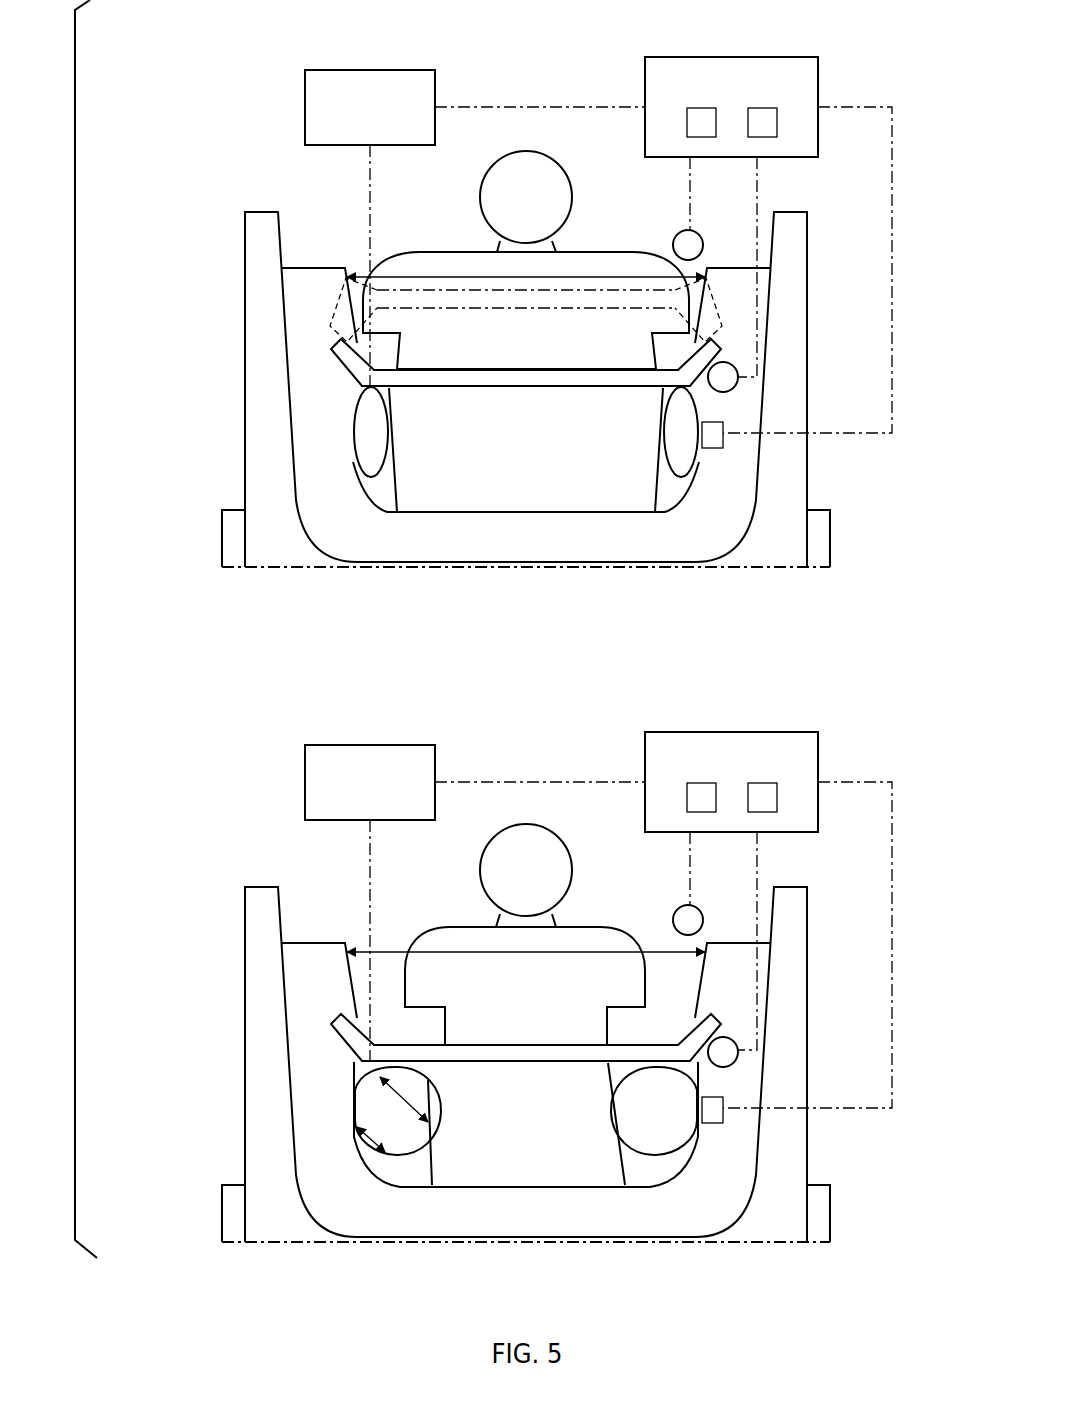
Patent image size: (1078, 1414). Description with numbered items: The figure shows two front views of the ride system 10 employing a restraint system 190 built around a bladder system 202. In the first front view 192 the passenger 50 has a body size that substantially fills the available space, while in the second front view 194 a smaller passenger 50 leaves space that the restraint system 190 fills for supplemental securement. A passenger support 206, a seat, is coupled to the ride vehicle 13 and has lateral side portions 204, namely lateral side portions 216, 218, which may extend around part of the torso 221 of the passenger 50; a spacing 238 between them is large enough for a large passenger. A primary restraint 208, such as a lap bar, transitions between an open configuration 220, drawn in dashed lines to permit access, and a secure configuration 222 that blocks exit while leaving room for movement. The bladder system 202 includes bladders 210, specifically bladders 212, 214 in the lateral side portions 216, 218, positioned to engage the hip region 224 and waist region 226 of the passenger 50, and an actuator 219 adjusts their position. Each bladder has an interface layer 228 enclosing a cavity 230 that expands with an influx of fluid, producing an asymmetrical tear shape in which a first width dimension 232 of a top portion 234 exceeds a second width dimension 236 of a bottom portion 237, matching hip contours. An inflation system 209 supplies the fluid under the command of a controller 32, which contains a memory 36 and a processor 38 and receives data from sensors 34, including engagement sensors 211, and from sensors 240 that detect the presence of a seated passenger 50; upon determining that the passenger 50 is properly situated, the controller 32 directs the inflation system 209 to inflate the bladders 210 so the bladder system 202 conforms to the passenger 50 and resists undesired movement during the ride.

The ride system 10 is at (232, 37).
The ride vehicle 13 is at (258, 232).
The controller 32 is at (735, 57).
The sensor 34 is at (700, 238).
The memory 36 is at (777, 121).
The processor 38 is at (687, 119).
The passenger 50 is at (485, 263).
The restraint system 190 is at (187, 63).
The first front view 192 is at (177, 163).
The second front view 194 is at (203, 258).
The bladder system 202 is at (397, 433).
The lateral side portion 204 is at (316, 278).
The passenger support 206 is at (505, 547).
The primary restraint 208 is at (478, 378).
The inflation system 209 is at (370, 70).
The bladder 210 is at (365, 452).
The engagement sensor 211 is at (738, 385).
The bladder 212 is at (365, 405).
The bladder 214 is at (687, 410).
The lateral side portion 216 is at (297, 298).
The lateral side portion 218 is at (742, 320).
The actuator 219 is at (725, 440).
The open configuration 220 is at (618, 288).
The torso 221 is at (427, 333).
The secure configuration 222 is at (527, 393).
The hip region 224 is at (650, 432).
The waist region 226 is at (403, 392).
The interface layer 228 is at (367, 1095).
The cavity 230 is at (383, 1115).
The first width dimension 232 is at (420, 1080).
The top portion 234 is at (428, 1082).
The second width dimension 236 is at (360, 1152).
The bottom portion 237 is at (367, 1153).
The spacing 238 is at (524, 277).
The sensor 240 is at (675, 238).